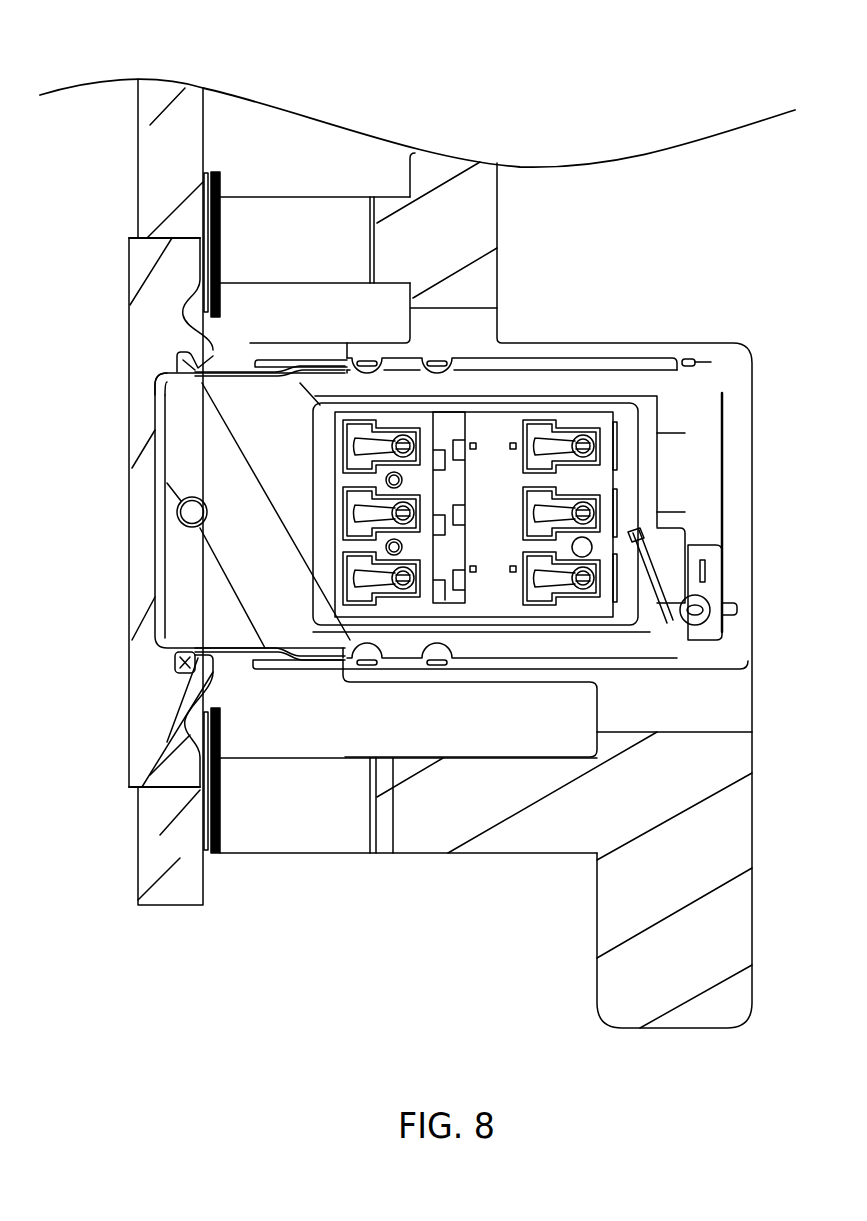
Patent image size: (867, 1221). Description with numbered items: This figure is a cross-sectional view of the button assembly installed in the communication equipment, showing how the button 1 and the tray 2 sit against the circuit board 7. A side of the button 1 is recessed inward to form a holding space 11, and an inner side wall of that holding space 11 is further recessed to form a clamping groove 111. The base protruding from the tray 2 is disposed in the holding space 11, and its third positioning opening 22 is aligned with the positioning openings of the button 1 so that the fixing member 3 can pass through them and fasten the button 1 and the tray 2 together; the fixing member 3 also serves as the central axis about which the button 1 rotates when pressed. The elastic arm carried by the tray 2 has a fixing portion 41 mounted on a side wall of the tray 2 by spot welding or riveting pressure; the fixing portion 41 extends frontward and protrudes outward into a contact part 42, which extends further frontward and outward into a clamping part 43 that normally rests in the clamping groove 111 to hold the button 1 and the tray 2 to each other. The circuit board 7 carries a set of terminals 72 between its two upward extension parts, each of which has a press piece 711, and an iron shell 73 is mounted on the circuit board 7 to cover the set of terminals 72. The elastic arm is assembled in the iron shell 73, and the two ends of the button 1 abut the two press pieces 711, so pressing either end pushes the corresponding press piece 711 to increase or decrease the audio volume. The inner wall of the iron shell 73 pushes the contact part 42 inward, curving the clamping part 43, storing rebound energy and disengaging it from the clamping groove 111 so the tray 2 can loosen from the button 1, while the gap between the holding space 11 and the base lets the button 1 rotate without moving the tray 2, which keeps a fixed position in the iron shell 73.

The button 1 is at (158, 305).
The holding space 11 is at (157, 617).
The clamping groove 111 is at (190, 675).
The tray 2 is at (182, 450).
The third positioning opening 22 is at (185, 528).
The fixing member 3 is at (187, 513).
The fixing portion 41 is at (327, 380).
The contact part 42 is at (220, 527).
The clamping part 43 is at (155, 375).
The circuit board 7 is at (740, 547).
The press piece 711 is at (207, 207).
The set of terminals 72 is at (173, 355).
The iron shell 73 is at (343, 362).